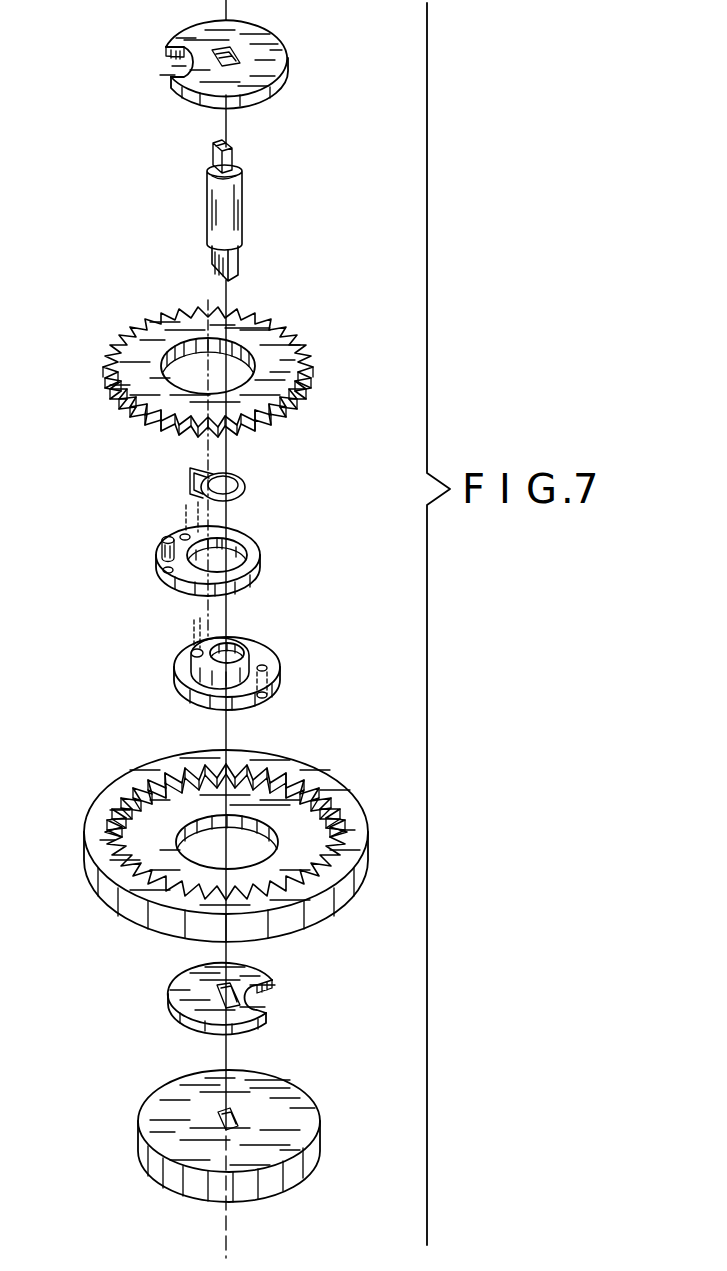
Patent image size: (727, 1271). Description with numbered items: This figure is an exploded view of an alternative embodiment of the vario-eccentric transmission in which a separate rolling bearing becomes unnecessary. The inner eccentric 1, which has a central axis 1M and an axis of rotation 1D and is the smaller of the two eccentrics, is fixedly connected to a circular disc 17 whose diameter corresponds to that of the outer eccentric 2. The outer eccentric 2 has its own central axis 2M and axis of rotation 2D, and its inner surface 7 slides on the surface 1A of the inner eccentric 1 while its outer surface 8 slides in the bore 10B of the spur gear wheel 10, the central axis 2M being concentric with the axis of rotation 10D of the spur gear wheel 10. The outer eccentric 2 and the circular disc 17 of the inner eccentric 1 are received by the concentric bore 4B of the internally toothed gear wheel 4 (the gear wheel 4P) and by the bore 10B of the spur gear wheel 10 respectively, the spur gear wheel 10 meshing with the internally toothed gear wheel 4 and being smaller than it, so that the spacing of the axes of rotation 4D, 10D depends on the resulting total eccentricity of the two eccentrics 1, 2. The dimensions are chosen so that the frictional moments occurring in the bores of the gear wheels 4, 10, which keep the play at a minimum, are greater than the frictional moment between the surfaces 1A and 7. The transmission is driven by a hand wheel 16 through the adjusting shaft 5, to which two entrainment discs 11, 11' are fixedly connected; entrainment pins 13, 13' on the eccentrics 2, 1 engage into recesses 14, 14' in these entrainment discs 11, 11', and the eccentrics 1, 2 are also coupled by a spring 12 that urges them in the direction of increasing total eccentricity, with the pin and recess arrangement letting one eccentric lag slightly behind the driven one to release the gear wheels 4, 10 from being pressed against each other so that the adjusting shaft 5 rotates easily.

The inner eccentric 1 is at (203, 642).
The surface of the inner eccentric 1A is at (212, 684).
The axis of rotation of the inner eccentric 1D is at (228, 617).
The central axis of the inner eccentric 1M is at (198, 608).
The outer eccentric 2 is at (174, 582).
The axis of rotation of the outer eccentric 2D is at (228, 521).
The central axis of the outer eccentric 2M is at (196, 513).
The internally toothed gear wheel 4 is at (327, 796).
The concentric bore 4B is at (260, 858).
The axis of rotation of the gear wheel 4D is at (220, 848).
The gear wheel 4P is at (303, 863).
The adjusting shaft 5 is at (240, 208).
The inner surface of the outer eccentric 7 is at (243, 540).
The outer surface of the outer eccentric 8 is at (250, 590).
The spur gear wheel 10 is at (296, 404).
The bore of the spur gear wheel 10B is at (243, 372).
The axis of rotation of the spur gear wheel 10D is at (205, 372).
The entrainment disc 11 is at (215, 64).
The entrainment disc 11' is at (229, 999).
The spring 12 is at (246, 482).
The entrainment pin 13 is at (126, 549).
The entrainment pin 13' is at (297, 695).
The recess 14 is at (142, 62).
The recess 14' is at (296, 996).
The hand wheel 16 is at (158, 1108).
The circular disc 17 is at (293, 658).